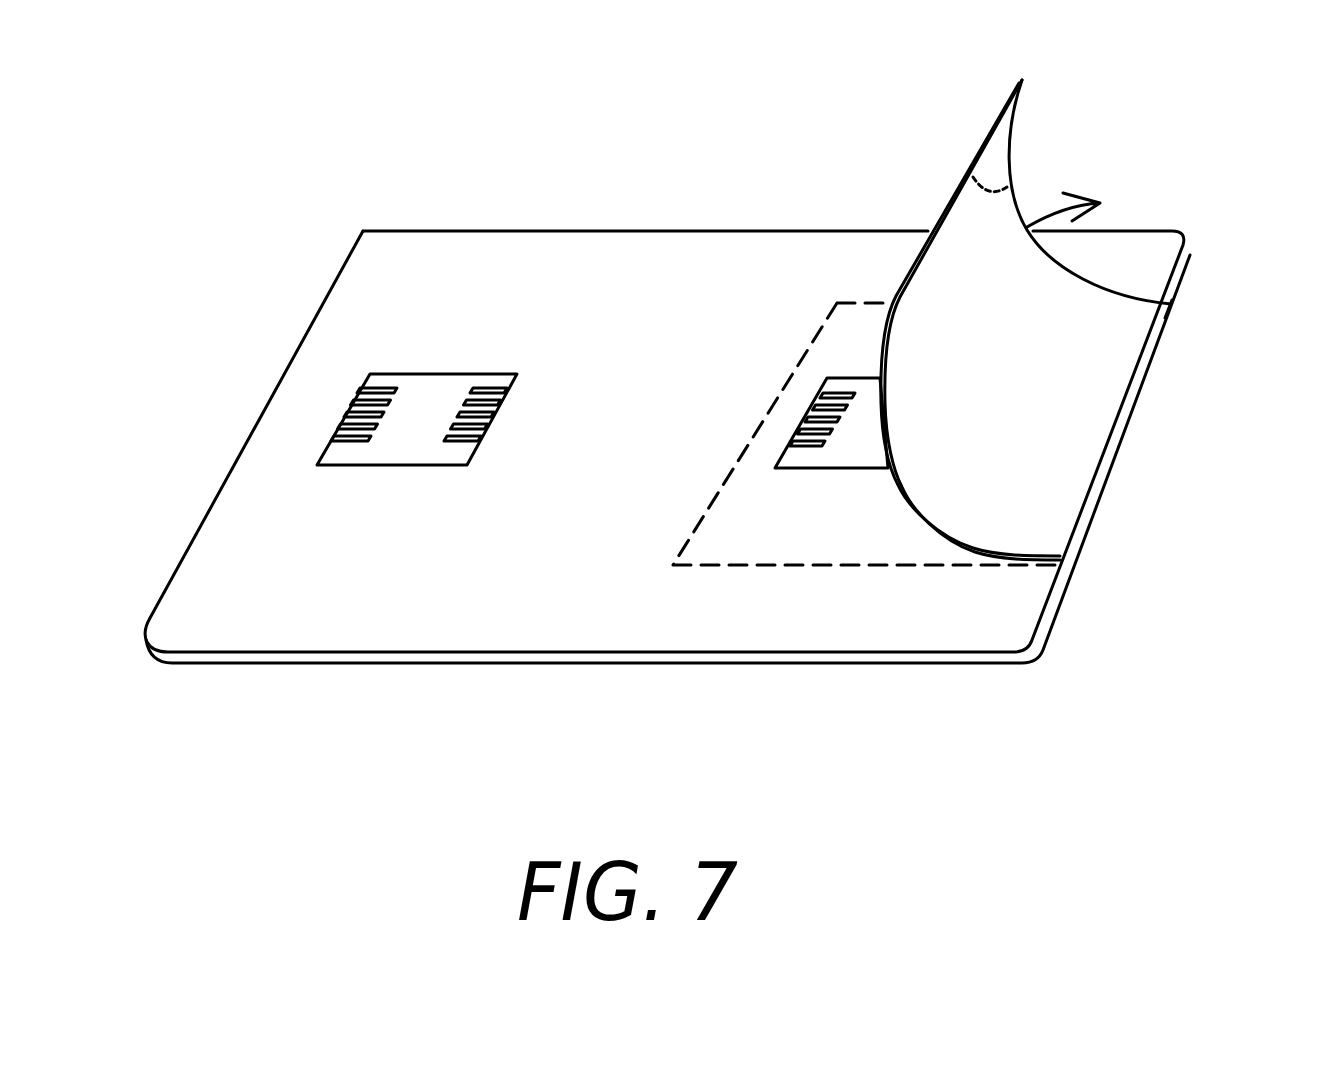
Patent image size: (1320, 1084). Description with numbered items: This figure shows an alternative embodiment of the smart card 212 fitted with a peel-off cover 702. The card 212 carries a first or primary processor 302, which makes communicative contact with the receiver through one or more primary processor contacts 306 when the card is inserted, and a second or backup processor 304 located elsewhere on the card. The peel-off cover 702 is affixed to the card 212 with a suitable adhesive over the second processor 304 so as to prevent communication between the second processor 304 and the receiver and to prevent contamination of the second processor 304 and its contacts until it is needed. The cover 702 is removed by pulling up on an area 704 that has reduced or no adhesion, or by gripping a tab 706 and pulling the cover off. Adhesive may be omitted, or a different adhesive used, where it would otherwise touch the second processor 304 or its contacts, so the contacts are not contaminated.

The smart card 212 is at (628, 585).
The first processor 302 is at (430, 578).
The second processor 304 is at (843, 468).
The primary processor contacts 306 is at (357, 443).
The peel-off cover 702 is at (987, 260).
The area of reduced or no adhesion 704 is at (993, 160).
The tab 706 is at (1170, 322).